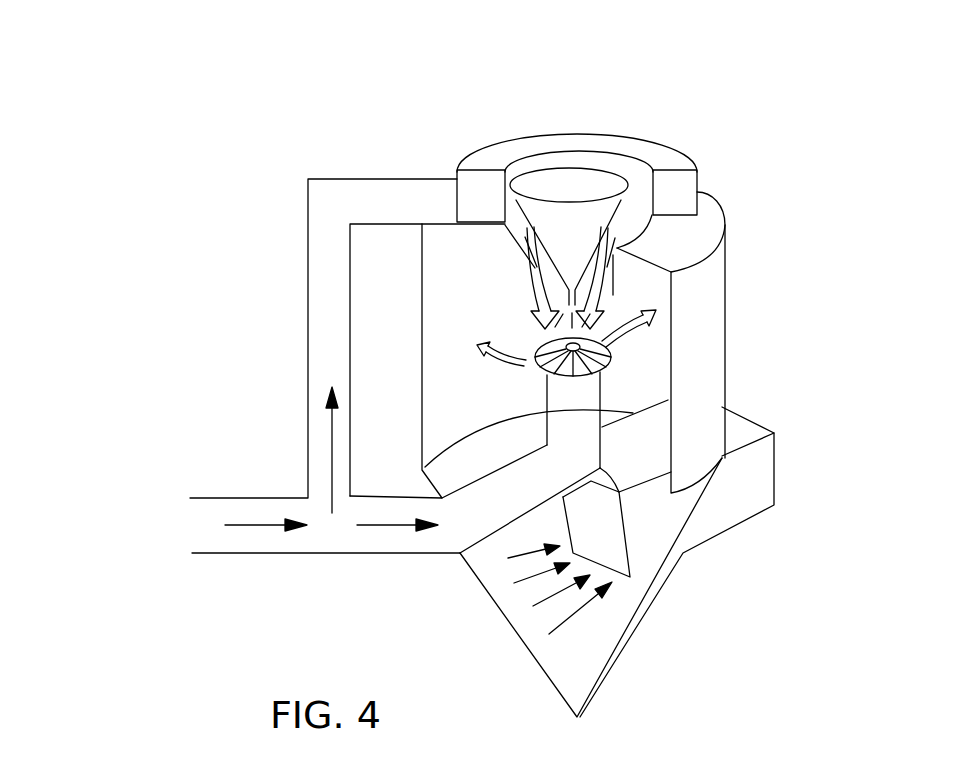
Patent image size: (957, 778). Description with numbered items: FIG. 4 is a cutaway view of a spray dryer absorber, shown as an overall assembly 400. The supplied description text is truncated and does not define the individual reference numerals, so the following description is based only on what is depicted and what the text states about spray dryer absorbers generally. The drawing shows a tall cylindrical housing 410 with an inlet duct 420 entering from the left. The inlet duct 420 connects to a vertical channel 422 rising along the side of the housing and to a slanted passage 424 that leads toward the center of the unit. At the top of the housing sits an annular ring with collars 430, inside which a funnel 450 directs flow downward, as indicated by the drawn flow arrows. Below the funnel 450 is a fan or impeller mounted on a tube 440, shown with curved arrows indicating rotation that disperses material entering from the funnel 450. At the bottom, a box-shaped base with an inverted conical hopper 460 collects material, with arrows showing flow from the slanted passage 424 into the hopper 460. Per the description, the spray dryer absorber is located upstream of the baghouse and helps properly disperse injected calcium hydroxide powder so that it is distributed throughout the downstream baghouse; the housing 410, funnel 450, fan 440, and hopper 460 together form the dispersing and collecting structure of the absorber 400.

The fluid handling system 400 is at (262, 47).
The cylindrical housing body 410 is at (748, 274).
The inlet duct 420 is at (260, 527).
The vertical channel 422 is at (327, 446).
The slanted passage 424 is at (373, 527).
The annular ring with collars 430 is at (495, 172).
The fan impeller with tube 440 is at (590, 397).
The funnel 450 is at (570, 222).
The collection hopper base 460 is at (737, 496).